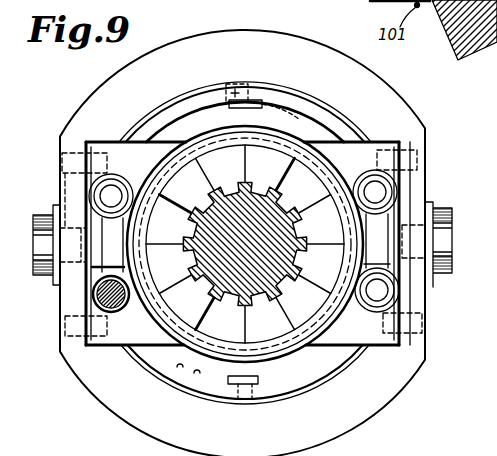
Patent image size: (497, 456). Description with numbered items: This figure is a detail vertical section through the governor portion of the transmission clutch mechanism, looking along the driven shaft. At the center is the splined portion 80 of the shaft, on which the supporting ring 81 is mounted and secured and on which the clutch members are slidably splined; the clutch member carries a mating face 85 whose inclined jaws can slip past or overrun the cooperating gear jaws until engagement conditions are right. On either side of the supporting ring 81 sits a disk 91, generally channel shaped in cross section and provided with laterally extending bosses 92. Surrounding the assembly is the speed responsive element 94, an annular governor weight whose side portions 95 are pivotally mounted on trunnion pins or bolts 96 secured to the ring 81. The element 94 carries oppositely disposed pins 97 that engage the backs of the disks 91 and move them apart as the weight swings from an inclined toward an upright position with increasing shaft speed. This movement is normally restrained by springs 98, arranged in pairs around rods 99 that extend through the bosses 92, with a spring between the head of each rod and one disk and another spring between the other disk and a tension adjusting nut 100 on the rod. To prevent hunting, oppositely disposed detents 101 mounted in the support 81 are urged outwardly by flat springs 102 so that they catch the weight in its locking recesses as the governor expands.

The splined portion 80 is at (274, 209).
The supporting ring 81 is at (177, 128).
The mating face 85 is at (296, 300).
The disk 91 is at (301, 137).
The boss 92 is at (354, 152).
The speed responsive element 94 is at (261, 46).
The side portion 95 is at (67, 172).
The trunnion pin 96 is at (34, 222).
The pin 97 is at (405, 142).
The spring 98 is at (136, 313).
The rod 99 is at (112, 198).
The tension adjusting nut 100 is at (411, 202).
The detent 101 is at (205, 84).
The flat spring 102 is at (268, 98).